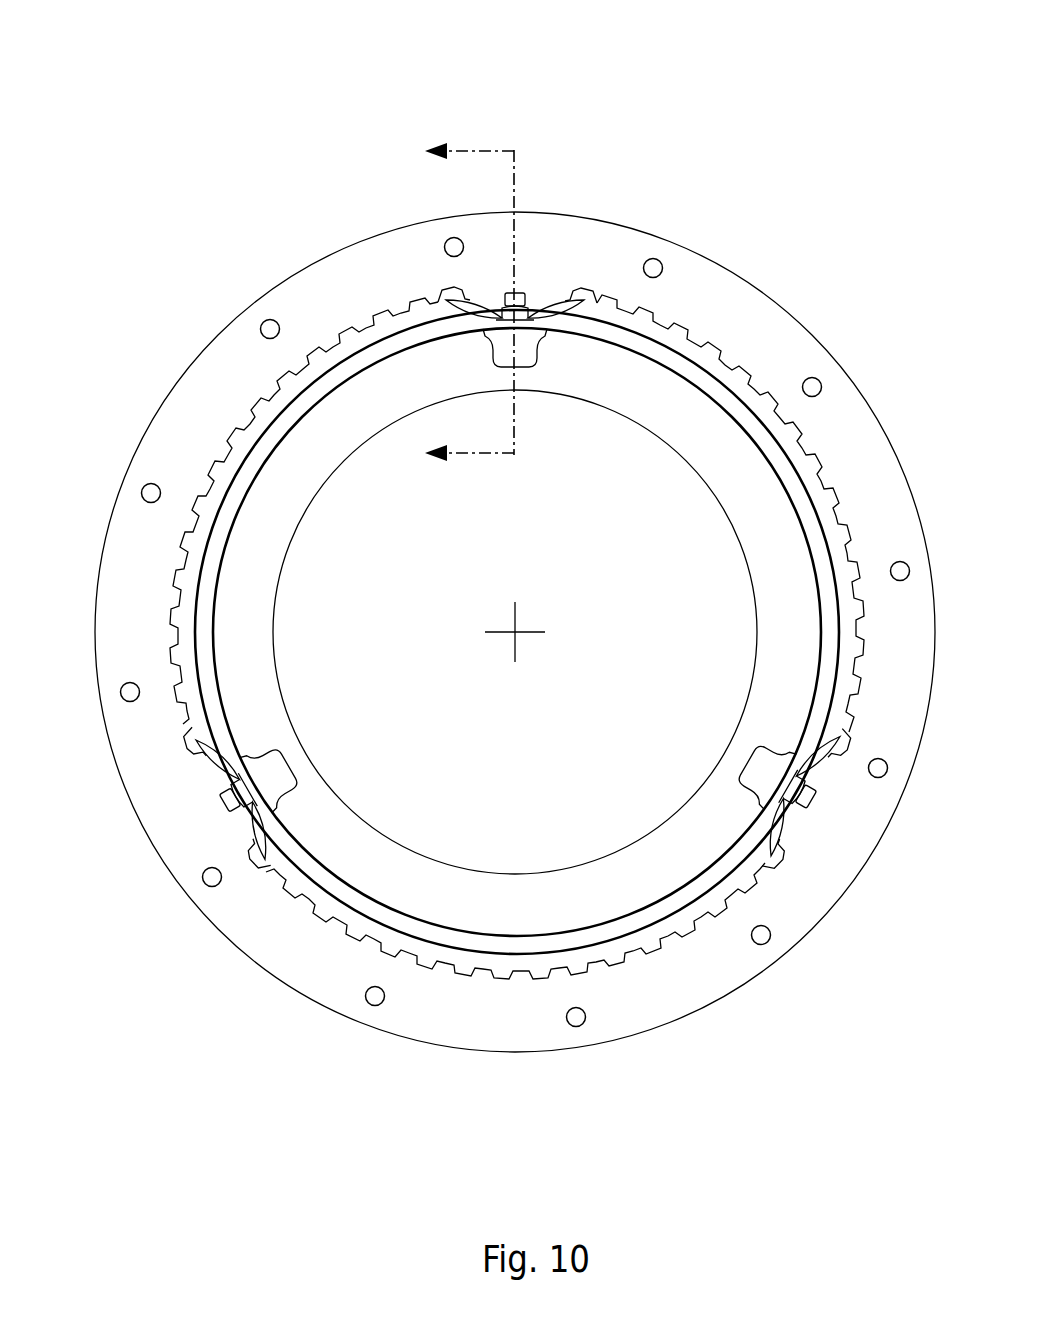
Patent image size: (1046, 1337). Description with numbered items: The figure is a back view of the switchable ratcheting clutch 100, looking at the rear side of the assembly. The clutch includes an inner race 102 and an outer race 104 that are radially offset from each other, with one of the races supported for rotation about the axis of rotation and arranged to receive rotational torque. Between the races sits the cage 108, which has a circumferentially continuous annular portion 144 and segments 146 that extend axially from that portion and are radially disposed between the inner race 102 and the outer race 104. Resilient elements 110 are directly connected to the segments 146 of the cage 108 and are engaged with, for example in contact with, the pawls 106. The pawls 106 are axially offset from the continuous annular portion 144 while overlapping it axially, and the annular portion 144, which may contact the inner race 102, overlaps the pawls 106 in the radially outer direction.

The switchable ratcheting clutch 100 is at (833, 102).
The inner race 102 is at (708, 490).
The outer race 104 is at (260, 295).
The pawls 106 is at (530, 358).
The cage 108 is at (705, 366).
The resilient elements 110 is at (527, 296).
The circumferentially continuous annular portion 144 is at (280, 413).
The segments 146 is at (509, 298).